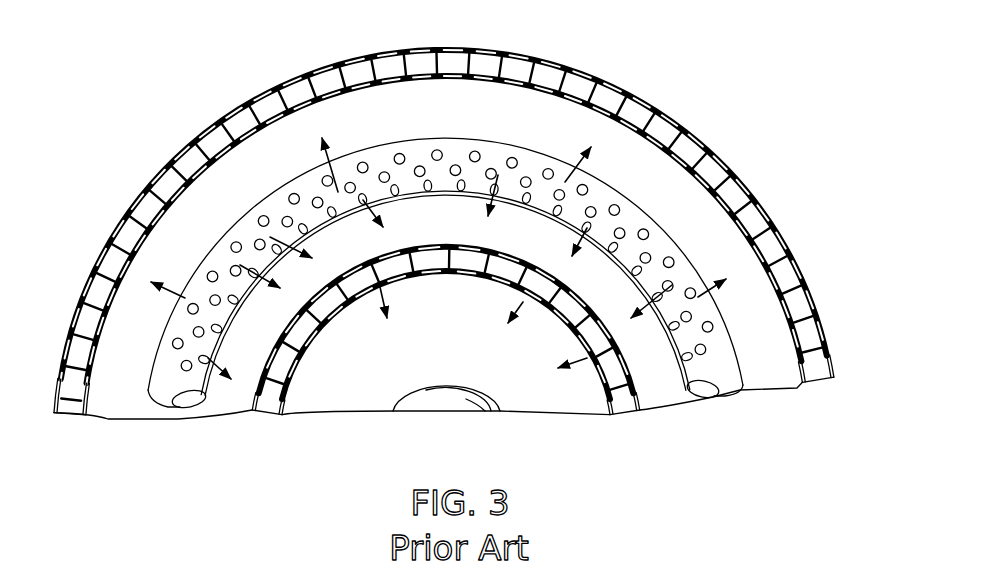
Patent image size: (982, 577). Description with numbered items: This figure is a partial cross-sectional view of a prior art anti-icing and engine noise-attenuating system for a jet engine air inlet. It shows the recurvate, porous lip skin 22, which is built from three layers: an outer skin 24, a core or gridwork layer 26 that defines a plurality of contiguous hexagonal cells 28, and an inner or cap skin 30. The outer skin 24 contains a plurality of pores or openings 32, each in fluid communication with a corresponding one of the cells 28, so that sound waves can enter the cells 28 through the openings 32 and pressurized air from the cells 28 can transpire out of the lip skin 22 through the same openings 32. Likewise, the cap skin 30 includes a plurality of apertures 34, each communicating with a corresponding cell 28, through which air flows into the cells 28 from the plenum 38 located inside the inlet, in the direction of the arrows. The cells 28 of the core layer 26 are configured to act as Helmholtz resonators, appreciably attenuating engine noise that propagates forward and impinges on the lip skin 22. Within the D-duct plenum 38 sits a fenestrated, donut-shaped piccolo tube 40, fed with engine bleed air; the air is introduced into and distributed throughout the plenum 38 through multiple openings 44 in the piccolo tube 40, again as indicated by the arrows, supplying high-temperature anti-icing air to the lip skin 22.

The lip skin 22 is at (431, 237).
The outer skin 24 is at (70, 318).
The core or gridwork layer 26 is at (75, 398).
The hexagonal cells 28 is at (504, 75).
The inner or cap skin 30 is at (468, 243).
The pores or openings 32 is at (288, 74).
The apertures 34 is at (424, 80).
The plenum 38 is at (693, 165).
The piccolo tube 40 is at (445, 254).
The openings 44 is at (437, 150).